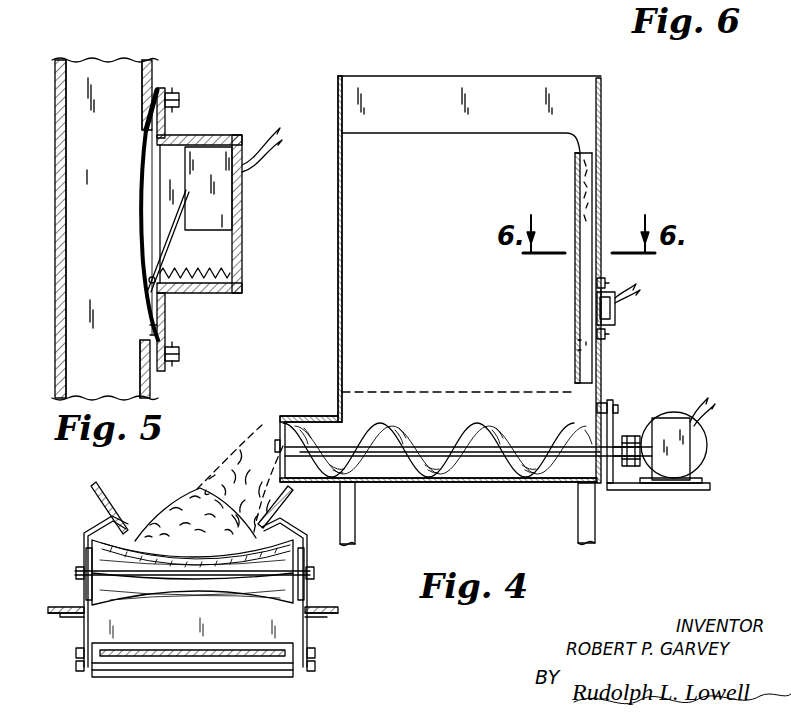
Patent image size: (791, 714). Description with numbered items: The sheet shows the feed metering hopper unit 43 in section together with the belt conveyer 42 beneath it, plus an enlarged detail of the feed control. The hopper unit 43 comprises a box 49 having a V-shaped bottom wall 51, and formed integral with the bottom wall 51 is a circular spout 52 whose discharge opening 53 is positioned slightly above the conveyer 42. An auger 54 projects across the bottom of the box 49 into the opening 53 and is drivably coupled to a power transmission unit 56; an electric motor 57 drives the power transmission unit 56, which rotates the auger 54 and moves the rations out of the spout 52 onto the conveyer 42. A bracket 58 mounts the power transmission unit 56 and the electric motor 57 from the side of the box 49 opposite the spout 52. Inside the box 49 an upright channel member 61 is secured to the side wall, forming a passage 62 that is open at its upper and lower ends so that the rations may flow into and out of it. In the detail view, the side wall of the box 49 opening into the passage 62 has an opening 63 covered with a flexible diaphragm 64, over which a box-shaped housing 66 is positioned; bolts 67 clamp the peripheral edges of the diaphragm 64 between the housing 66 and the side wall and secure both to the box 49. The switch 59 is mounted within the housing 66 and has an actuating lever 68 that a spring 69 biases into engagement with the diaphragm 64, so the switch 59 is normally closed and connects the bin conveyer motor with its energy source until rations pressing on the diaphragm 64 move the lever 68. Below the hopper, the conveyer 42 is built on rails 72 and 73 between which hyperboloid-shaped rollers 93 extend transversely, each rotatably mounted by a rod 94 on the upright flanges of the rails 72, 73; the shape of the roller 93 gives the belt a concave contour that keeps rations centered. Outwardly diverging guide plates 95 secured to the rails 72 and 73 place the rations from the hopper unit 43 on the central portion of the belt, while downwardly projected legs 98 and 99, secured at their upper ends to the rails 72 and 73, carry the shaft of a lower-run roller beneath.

In FIG. 4, the conveyer 42 is at (77, 512).
In FIG. 4, the hopper unit 43 is at (603, 110).
In FIG. 5, the box 49 is at (152, 62).
In FIG. 4, the box 49 is at (338, 275).
In FIG. 4, the bottom wall 51 is at (462, 488).
In FIG. 4, the spout 52 is at (310, 413).
In FIG. 4, the discharge opening 53 is at (270, 462).
In FIG. 4, the auger 54 is at (488, 432).
In FIG. 4, the power transmission unit 56 is at (693, 463).
In FIG. 4, the electric motor 57 is at (673, 413).
In FIG. 4, the bracket 58 is at (630, 492).
In FIG. 5, the switch 59 is at (213, 155).
In FIG. 4, the switch 59 is at (617, 314).
In FIG. 5, the channel member 61 is at (55, 66).
In FIG. 4, the channel member 61 is at (575, 183).
In FIG. 5, the passage 62 is at (77, 231).
In FIG. 4, the passage 62 is at (588, 203).
In FIG. 5, the opening 63 is at (147, 123).
In FIG. 5, the flexible diaphragm 64 is at (145, 173).
In FIG. 4, the flexible diaphragm 64 is at (602, 310).
In FIG. 5, the housing 66 is at (245, 230).
In FIG. 4, the housing 66 is at (614, 327).
In FIG. 5, the bolts 67 is at (180, 97).
In FIG. 5, the actuating lever 68 is at (167, 230).
In FIG. 5, the spring 69 is at (213, 270).
In FIG. 4, the rail 72 is at (57, 603).
In FIG. 4, the rail 73 is at (330, 610).
In FIG. 4, the hyperboloid-shaped roller 93 is at (252, 581).
In FIG. 4, the rod 94 is at (310, 573).
In FIG. 4, the guide plates 95 is at (110, 485).
In FIG. 4, the leg 98 is at (82, 630).
In FIG. 4, the leg 99 is at (302, 632).